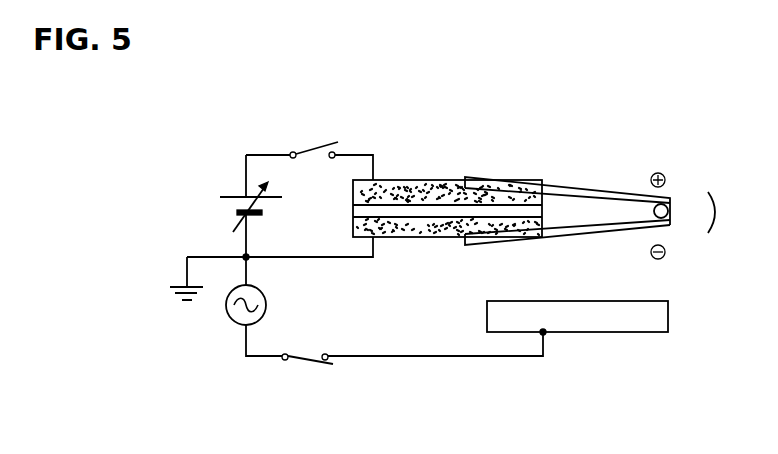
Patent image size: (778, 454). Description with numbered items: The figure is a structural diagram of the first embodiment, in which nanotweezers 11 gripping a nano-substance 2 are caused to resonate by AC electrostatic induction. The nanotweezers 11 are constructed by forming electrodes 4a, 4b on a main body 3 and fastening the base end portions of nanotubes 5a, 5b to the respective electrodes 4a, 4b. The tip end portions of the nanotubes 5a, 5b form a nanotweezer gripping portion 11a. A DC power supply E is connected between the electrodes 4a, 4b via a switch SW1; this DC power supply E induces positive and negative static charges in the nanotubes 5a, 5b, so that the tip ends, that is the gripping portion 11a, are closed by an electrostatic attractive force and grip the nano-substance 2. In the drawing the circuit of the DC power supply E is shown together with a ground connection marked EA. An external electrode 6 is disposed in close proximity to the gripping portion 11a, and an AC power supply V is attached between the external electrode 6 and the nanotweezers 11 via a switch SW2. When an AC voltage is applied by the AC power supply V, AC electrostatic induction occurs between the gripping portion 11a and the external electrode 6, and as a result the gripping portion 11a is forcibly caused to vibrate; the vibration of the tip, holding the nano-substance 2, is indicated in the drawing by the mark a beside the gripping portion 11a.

The nano-substance 2 is at (667, 210).
The main body 3 is at (377, 207).
The electrode 4a is at (422, 187).
The electrode 4b is at (447, 227).
The nanotube 5a is at (587, 187).
The nanotube 5b is at (593, 233).
The external electrode 6 is at (615, 320).
The nanotweezers 11 is at (522, 132).
The nanotweezer gripping portion 11a is at (630, 185).
The DC power supply E is at (223, 197).
The ground EA is at (170, 287).
The AC power supply V is at (240, 323).
The switch SW1 is at (328, 145).
The switch SW2 is at (303, 360).
The displacement amplitude a is at (723, 212).